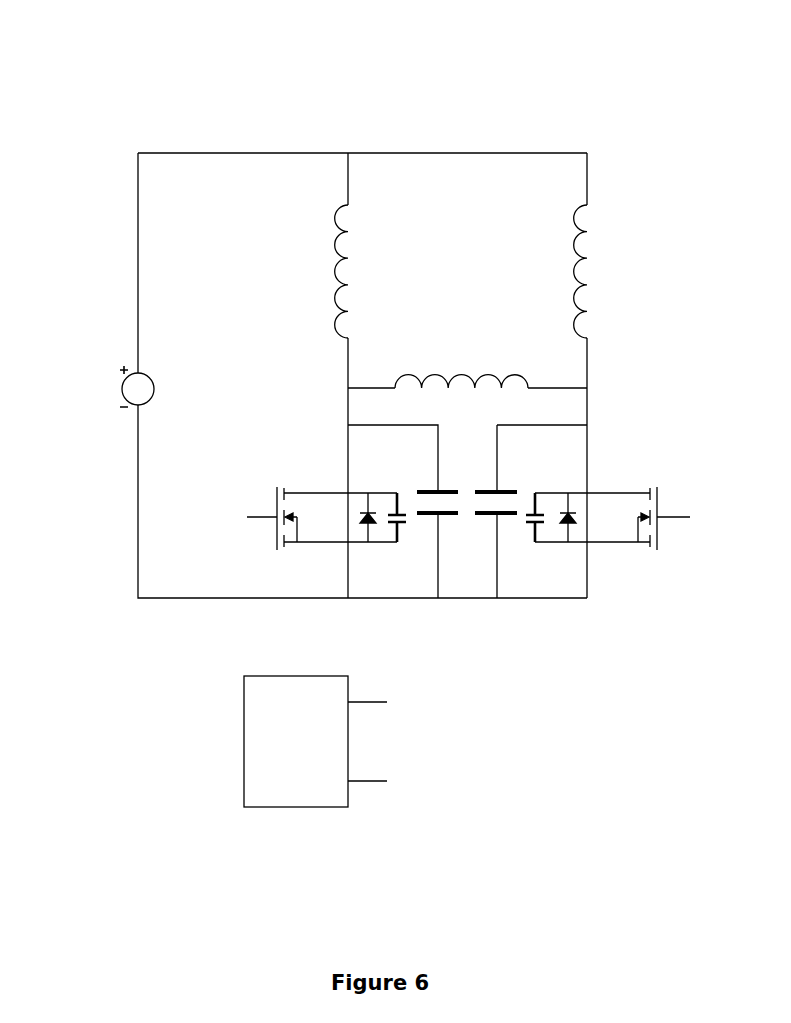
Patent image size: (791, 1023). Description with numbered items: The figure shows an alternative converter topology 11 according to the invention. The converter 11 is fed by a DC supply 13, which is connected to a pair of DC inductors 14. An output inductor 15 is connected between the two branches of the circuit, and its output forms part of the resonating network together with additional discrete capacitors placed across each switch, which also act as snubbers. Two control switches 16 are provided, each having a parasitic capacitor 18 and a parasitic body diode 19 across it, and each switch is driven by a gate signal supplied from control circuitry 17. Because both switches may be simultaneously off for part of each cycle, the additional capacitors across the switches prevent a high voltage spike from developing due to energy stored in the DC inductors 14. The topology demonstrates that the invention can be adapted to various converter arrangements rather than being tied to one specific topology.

The converter topology 11 is at (663, 85).
The DC supply 13 is at (125, 381).
The DC inductors 14 is at (572, 221).
The output inductor 15 is at (462, 372).
The control switches 16 is at (278, 497).
The control circuitry 17 is at (340, 807).
The parasitic capacitors 18 is at (394, 511).
The parasitic body diodes 19 is at (370, 523).